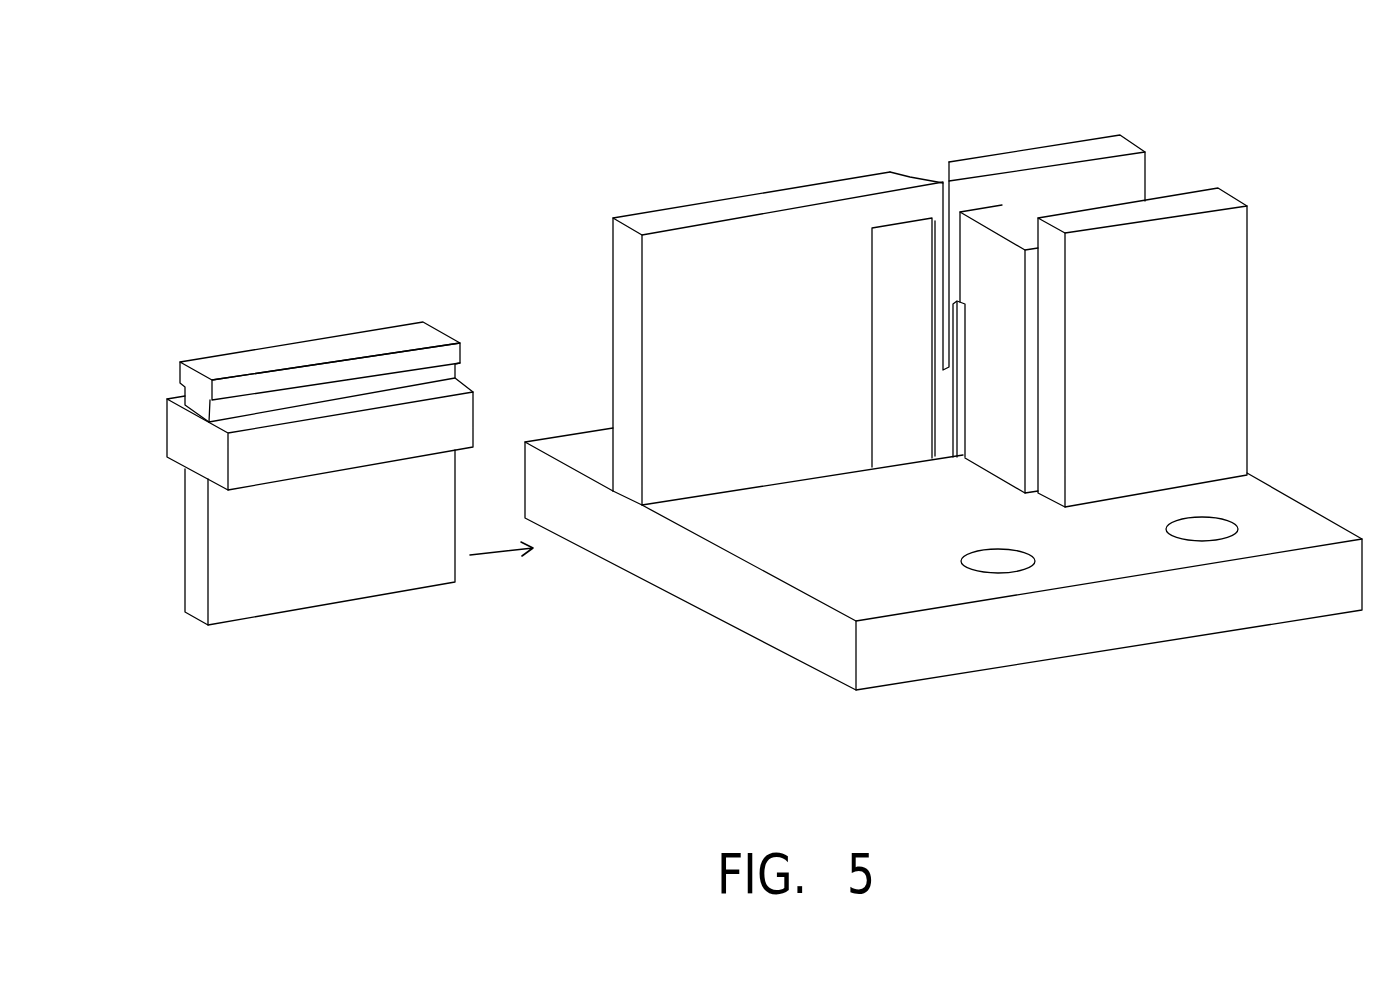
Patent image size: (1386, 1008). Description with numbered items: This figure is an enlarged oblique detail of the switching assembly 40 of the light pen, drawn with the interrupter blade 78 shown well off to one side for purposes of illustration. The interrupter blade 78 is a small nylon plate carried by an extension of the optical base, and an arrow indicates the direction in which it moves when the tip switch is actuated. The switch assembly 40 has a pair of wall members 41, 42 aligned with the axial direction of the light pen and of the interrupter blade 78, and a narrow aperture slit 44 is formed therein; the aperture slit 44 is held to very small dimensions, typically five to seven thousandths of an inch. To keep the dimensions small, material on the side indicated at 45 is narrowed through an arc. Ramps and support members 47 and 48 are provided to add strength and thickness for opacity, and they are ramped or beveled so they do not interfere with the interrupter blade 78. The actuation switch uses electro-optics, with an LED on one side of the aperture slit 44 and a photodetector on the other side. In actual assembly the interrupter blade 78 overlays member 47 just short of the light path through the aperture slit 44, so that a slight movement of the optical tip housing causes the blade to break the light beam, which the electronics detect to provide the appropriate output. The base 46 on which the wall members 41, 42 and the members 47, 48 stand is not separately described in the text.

The switch assembly 40 is at (943, 370).
The wall member 41 is at (654, 219).
The wall member 42 is at (1088, 152).
The aperture slit 44 is at (943, 178).
The narrowed side 45 is at (907, 173).
The base plate 46 is at (1128, 557).
The ramp and support member 47 is at (892, 337).
The ramp and support member 48 is at (1000, 442).
The interrupter blade 78 is at (403, 563).